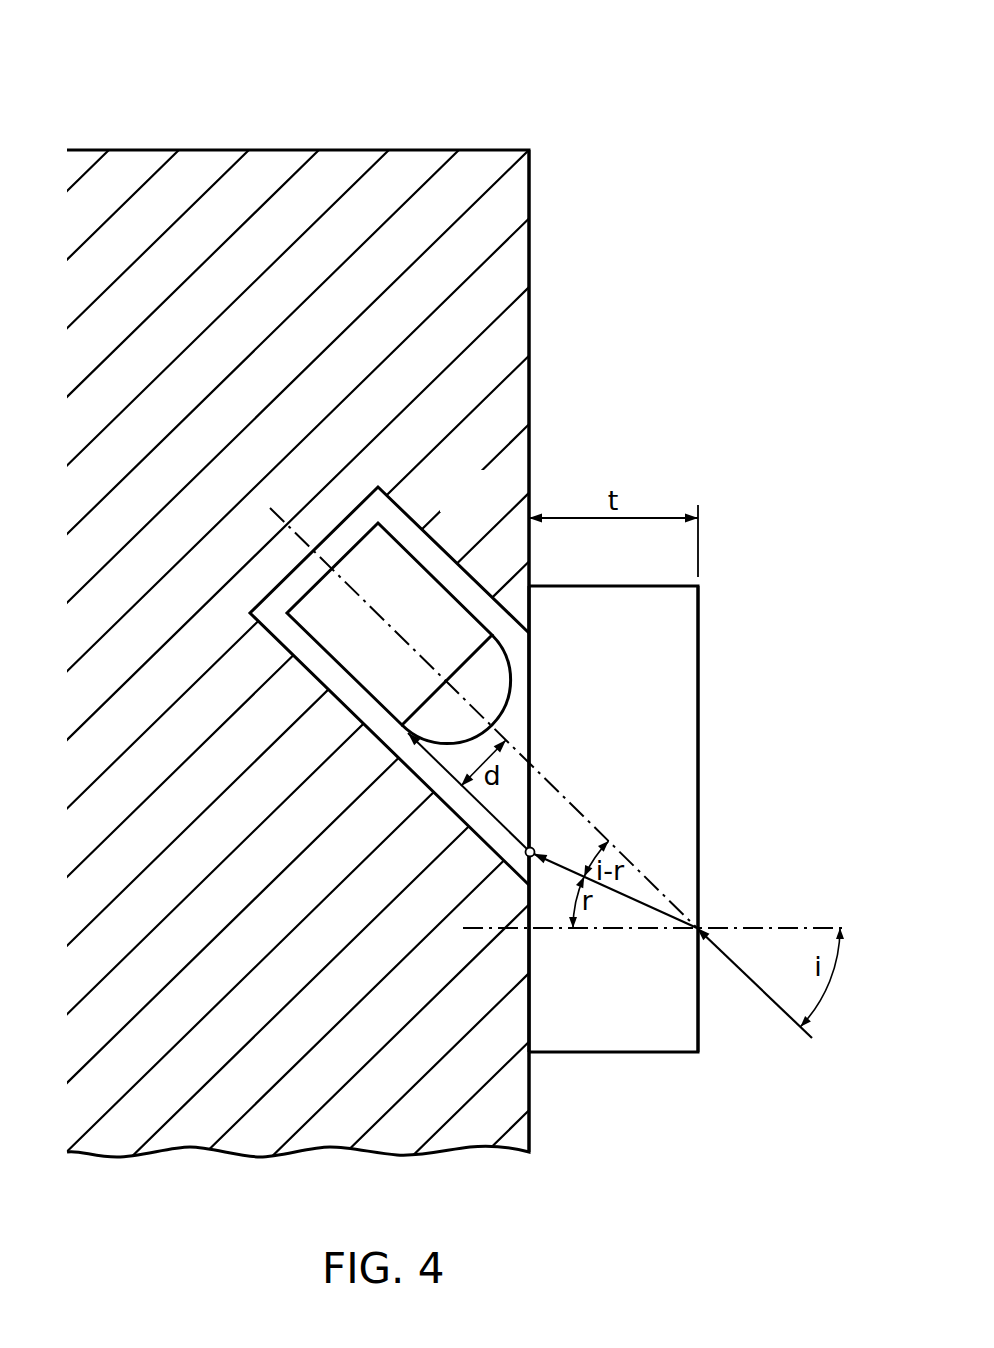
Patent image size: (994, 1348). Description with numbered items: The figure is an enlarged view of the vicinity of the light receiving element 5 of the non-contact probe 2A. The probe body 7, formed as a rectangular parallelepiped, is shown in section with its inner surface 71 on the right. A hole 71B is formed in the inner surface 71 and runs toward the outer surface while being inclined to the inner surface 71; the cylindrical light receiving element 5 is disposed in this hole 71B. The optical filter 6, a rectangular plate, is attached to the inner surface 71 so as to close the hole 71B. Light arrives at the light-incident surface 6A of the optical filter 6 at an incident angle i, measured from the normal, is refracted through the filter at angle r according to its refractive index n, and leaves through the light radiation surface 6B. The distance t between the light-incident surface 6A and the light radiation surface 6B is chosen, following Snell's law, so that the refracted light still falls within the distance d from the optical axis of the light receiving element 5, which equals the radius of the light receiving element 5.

The non-contact probe 2A is at (551, 71).
The probe body 7 is at (433, 148).
The inner surface 71 is at (529, 266).
The hole 71B is at (405, 512).
The light receiving element 5 is at (371, 655).
The optical filter 6 is at (667, 751).
The light-incident surface 6A is at (698, 672).
The light radiation surface 6B is at (529, 1008).